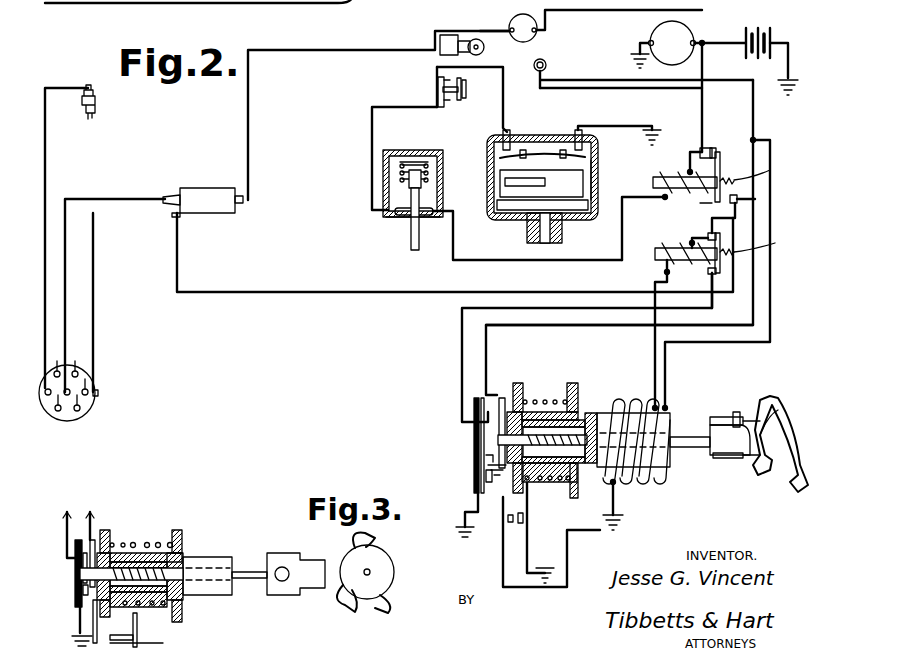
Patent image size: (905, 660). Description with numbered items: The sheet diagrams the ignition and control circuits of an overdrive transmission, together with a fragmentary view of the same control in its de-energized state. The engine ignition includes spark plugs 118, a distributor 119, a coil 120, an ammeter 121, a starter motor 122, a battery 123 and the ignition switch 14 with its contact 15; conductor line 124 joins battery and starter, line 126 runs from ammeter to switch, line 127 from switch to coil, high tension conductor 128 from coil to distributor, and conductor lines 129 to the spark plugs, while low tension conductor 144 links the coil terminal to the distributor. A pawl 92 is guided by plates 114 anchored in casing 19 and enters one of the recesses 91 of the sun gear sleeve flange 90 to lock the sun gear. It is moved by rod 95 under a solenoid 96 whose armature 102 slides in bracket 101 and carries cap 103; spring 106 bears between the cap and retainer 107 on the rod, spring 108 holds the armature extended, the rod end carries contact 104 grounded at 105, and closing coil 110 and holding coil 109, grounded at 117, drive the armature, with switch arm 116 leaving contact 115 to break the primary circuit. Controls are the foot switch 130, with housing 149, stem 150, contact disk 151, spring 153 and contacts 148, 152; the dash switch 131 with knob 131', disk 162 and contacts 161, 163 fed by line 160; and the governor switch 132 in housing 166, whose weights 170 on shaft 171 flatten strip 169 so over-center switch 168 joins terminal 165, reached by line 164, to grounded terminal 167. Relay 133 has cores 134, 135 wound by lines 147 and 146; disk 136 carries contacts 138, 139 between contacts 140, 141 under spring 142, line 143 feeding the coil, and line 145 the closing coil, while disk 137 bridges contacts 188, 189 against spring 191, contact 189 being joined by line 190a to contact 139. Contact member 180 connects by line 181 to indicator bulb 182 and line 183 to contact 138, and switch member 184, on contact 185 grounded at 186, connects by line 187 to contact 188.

In FIG. 2, the ignition switch 14 is at (445, 35).
In FIG. 2, the switch contact 15 is at (484, 48).
In FIG. 2, the casing 19 is at (198, 5).
In FIG. 2, the annular flange 90 is at (775, 418).
In FIG. 3, the annular flange 90 is at (375, 536).
In FIG. 2, the peripheral recesses 91 is at (757, 410).
In FIG. 3, the peripheral recesses 91 is at (340, 600).
In FIG. 2, the pawl 92 is at (736, 412).
In FIG. 3, the pawl 92 is at (292, 595).
In FIG. 2, the rod 95 is at (698, 448).
In FIG. 3, the rod 95 is at (250, 578).
In FIG. 2, the solenoid 96 is at (598, 408).
In FIG. 3, the solenoid 96 is at (148, 543).
In FIG. 2, the bracket 101 is at (574, 382).
In FIG. 3, the bracket 101 is at (182, 535).
In FIG. 2, the armature 102 is at (588, 395).
In FIG. 3, the armature 102 is at (186, 557).
In FIG. 2, the flanged cap portion 103 is at (518, 382).
In FIG. 3, the flanged cap portion 103 is at (105, 530).
In FIG. 2, the contact 104 is at (504, 410).
In FIG. 3, the contact 104 is at (93, 540).
In FIG. 2, the ground 105 is at (489, 482).
In FIG. 3, the ground 105 is at (78, 592).
In FIG. 2, the coil spring 106 is at (540, 485).
In FIG. 3, the coil spring 106 is at (134, 543).
In FIG. 2, the retainer 107 is at (598, 413).
In FIG. 3, the retainer 107 is at (158, 543).
In FIG. 2, the coil spring 108 is at (536, 399).
In FIG. 3, the coil spring 108 is at (118, 536).
In FIG. 2, the holding coil 109 is at (615, 490).
In FIG. 2, the closing coil 110 is at (655, 480).
In FIG. 2, the guide plates 114 is at (712, 418).
In FIG. 2, the contact 115 is at (503, 535).
In FIG. 3, the contact 115 is at (97, 620).
In FIG. 2, the switch arm 116 is at (527, 522).
In FIG. 3, the switch arm 116 is at (137, 628).
In FIG. 2, the ground 117 is at (620, 520).
In FIG. 2, the spark plugs 118 is at (97, 101).
In FIG. 2, the distributor 119 is at (50, 418).
In FIG. 2, the coil 120 is at (200, 193).
In FIG. 2, the ammeter 121 is at (537, 32).
In FIG. 2, the starter motor 122 is at (656, 30).
In FIG. 2, the battery 123 is at (766, 28).
In FIG. 2, the conductor line 124 is at (714, 40).
In FIG. 2, the conductor line 126 is at (492, 31).
In FIG. 2, the conductor line 127 is at (360, 50).
In FIG. 2, the high tension conductor 128 is at (117, 199).
In FIG. 2, the conductor lines 129 is at (45, 296).
In FIG. 2, the foot operated switch structure 130 is at (407, 150).
In FIG. 2, the hand operated switch structure 131 is at (467, 91).
In FIG. 2, the knob 131' is at (478, 84).
In FIG. 2, the governor operated switch structure 132 is at (497, 222).
In FIG. 2, the relay 133 is at (660, 207).
In FIG. 2, the movable core 134 is at (660, 176).
In FIG. 2, the movable core 135 is at (660, 247).
In FIG. 2, the disk 136 is at (722, 176).
In FIG. 2, the contact disk 137 is at (724, 288).
In FIG. 2, the contact 138 is at (716, 150).
In FIG. 2, the contact 139 is at (700, 204).
In FIG. 2, the contact 140 is at (700, 150).
In FIG. 2, the contact 141 is at (756, 199).
In FIG. 2, the coil spring 142 is at (764, 169).
In FIG. 2, the conductor line 143 is at (343, 300).
In FIG. 2, the low tension conductor 144 is at (93, 300).
In FIG. 2, the conductor line 145 is at (771, 305).
In FIG. 2, the conductor line 146 is at (752, 128).
In FIG. 2, the conductor line 147 is at (483, 260).
In FIG. 2, the contact 148 is at (433, 210).
In FIG. 2, the housing 149 is at (430, 158).
In FIG. 2, the stem 150 is at (424, 238).
In FIG. 2, the contact disk 151 is at (422, 186).
In FIG. 2, the contact 152 is at (390, 222).
In FIG. 2, the coil spring 153 is at (428, 168).
In FIG. 2, the conductor line 160 is at (372, 160).
In FIG. 2, the contact 161 is at (437, 100).
In FIG. 2, the contact disk 162 is at (432, 76).
In FIG. 2, the contact 163 is at (440, 78).
In FIG. 2, the conductor line 164 is at (505, 110).
In FIG. 2, the terminal 165 is at (508, 130).
In FIG. 2, the governor housing 166 is at (598, 185).
In FIG. 2, the grounded terminal 167 is at (580, 126).
In FIG. 2, the over-center switch 168 is at (545, 150).
In FIG. 2, the flexible metal strip 169 is at (562, 150).
In FIG. 2, the centrifugally movable weight members 170 is at (500, 200).
In FIG. 2, the shaft 171 is at (560, 238).
In FIG. 2, the contact member 180 is at (480, 410).
In FIG. 3, the contact member 180 is at (75, 560).
In FIG. 2, the conductor line 181 is at (555, 326).
In FIG. 3, the conductor line 181 is at (88, 515).
In FIG. 2, the indicator light bulb 182 is at (547, 64).
In FIG. 2, the conductor line 183 is at (628, 88).
In FIG. 2, the switch member 184 is at (480, 455).
In FIG. 3, the switch member 184 is at (82, 577).
In FIG. 2, the contact 185 is at (489, 464).
In FIG. 3, the contact 185 is at (80, 622).
In FIG. 2, the ground 186 is at (465, 512).
In FIG. 3, the ground 186 is at (74, 638).
In FIG. 2, the conductor line 187 is at (462, 360).
In FIG. 3, the conductor line 187 is at (67, 531).
In FIG. 2, the stationary contact 188 is at (705, 272).
In FIG. 2, the contact 189 is at (702, 240).
In FIG. 2, the conductor 190a is at (715, 220).
In FIG. 2, the spring 191 is at (758, 252).